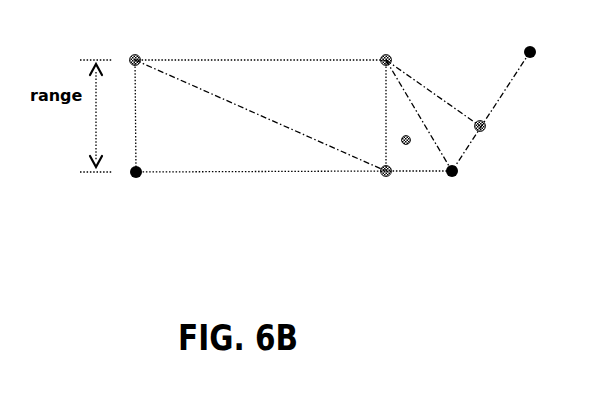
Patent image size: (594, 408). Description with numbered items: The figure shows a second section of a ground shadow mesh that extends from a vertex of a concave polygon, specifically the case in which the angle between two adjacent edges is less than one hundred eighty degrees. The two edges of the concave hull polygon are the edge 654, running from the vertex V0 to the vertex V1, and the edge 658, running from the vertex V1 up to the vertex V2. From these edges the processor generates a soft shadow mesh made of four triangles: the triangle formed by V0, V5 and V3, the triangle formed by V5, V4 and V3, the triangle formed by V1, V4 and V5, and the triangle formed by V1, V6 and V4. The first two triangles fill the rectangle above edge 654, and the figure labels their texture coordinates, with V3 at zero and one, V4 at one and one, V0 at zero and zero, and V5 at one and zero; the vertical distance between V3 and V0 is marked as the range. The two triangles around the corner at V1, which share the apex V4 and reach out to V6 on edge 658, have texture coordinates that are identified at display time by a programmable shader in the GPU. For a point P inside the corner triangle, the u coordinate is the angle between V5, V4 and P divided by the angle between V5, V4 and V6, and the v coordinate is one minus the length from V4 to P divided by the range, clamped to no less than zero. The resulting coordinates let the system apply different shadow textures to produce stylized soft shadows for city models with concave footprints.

The edge 654 is at (298, 173).
The edge 658 is at (517, 70).
The vertex V0 is at (194, 183).
The vertex V1 is at (461, 183).
The vertex V2 is at (551, 39).
The vertex V3 is at (186, 45).
The vertex V4 is at (383, 45).
The vertex V5 is at (387, 184).
The vertex V6 is at (501, 131).
The point P is at (414, 126).